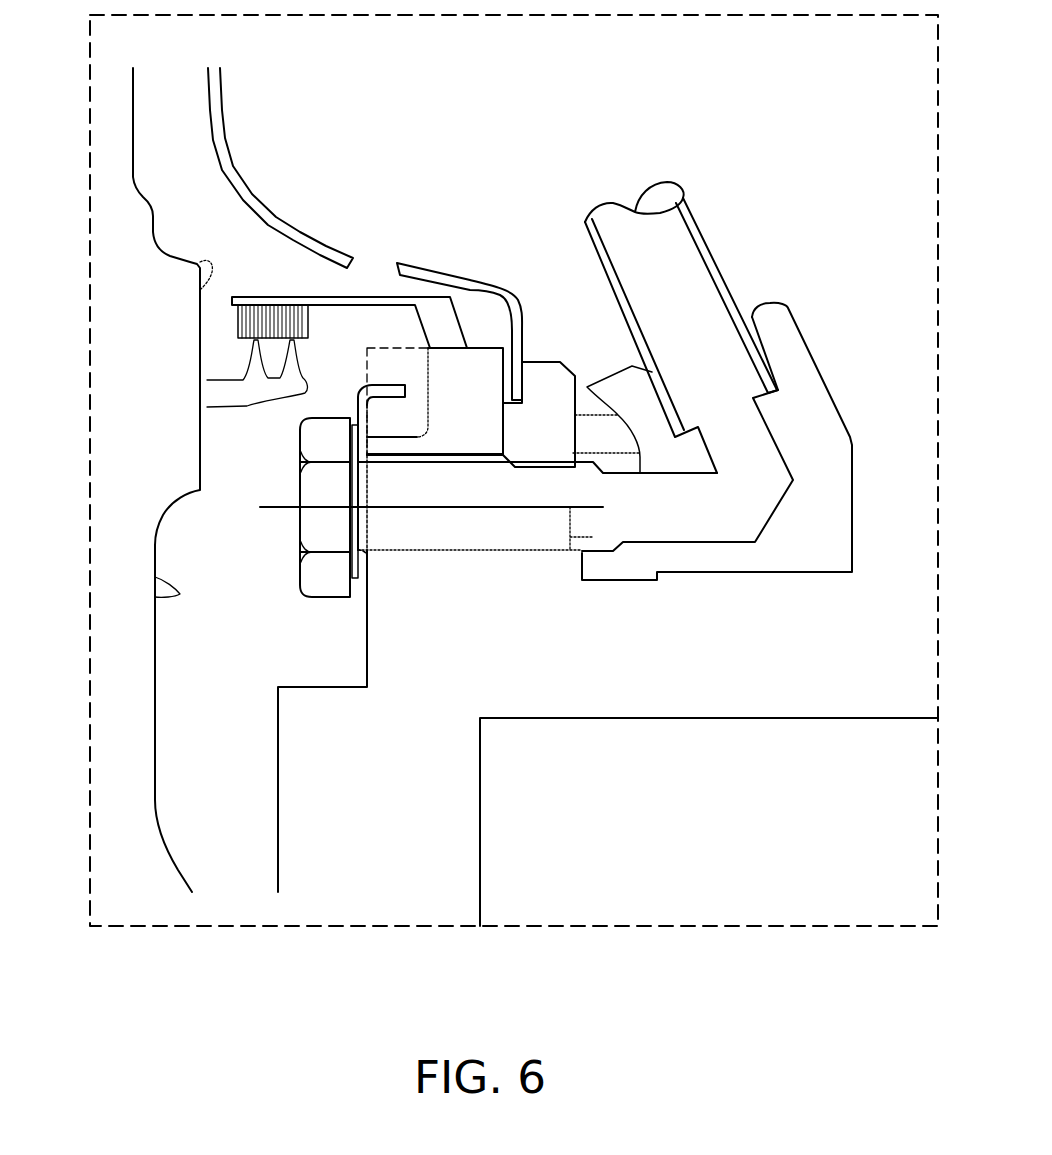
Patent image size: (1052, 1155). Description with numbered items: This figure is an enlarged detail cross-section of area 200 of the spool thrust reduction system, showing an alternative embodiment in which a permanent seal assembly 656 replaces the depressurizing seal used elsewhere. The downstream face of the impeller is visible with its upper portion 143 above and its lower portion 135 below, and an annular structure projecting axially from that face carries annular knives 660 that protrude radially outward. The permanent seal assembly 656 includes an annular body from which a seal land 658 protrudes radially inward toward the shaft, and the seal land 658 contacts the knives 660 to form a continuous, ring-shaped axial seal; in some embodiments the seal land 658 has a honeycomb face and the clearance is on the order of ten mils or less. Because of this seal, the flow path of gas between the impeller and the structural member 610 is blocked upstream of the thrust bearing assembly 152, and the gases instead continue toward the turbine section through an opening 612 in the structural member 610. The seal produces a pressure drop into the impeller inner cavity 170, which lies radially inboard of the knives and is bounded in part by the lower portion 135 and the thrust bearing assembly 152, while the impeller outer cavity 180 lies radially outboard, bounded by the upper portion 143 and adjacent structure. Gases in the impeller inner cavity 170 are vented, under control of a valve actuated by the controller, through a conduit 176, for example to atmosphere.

The lower portion of the downstream face of the impeller 135 is at (178, 594).
The upper portion of the downstream face of the impeller 143 is at (205, 262).
The thrust bearing assembly 152 is at (731, 843).
The impeller inner cavity 170 is at (208, 745).
The conduit 176 is at (710, 240).
The impeller outer cavity 180 is at (266, 278).
The area 200 is at (232, 926).
The structural member 610 is at (228, 132).
The opening 612 is at (350, 258).
The permanent seal assembly 656 is at (285, 296).
The seal land 658 is at (240, 322).
The annular knives 660 is at (245, 364).